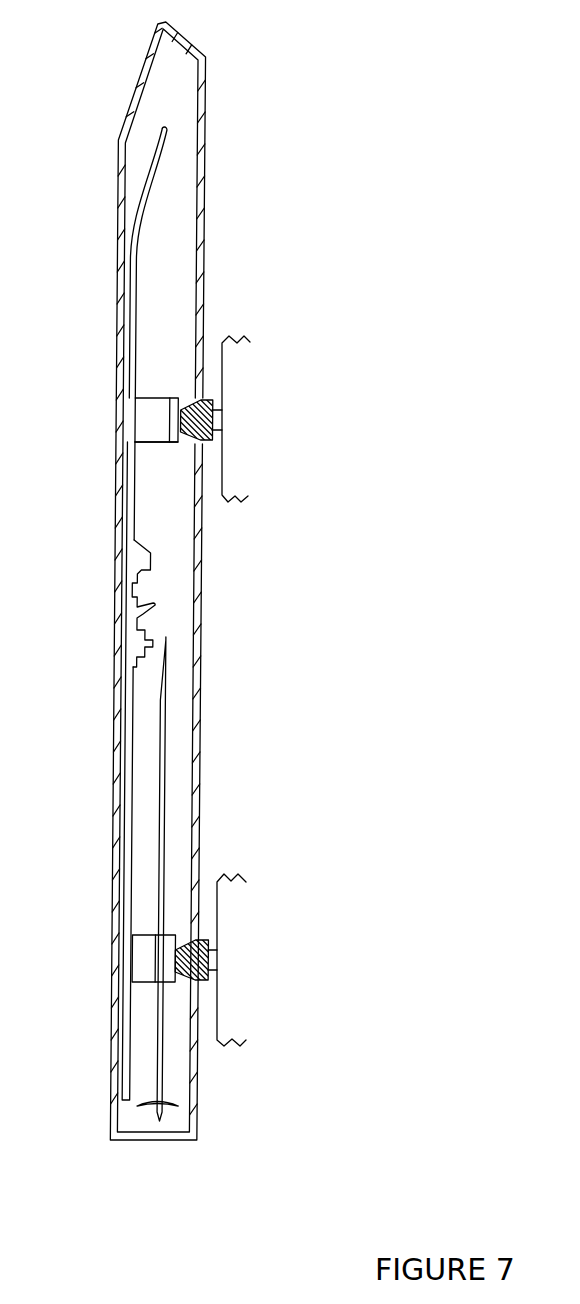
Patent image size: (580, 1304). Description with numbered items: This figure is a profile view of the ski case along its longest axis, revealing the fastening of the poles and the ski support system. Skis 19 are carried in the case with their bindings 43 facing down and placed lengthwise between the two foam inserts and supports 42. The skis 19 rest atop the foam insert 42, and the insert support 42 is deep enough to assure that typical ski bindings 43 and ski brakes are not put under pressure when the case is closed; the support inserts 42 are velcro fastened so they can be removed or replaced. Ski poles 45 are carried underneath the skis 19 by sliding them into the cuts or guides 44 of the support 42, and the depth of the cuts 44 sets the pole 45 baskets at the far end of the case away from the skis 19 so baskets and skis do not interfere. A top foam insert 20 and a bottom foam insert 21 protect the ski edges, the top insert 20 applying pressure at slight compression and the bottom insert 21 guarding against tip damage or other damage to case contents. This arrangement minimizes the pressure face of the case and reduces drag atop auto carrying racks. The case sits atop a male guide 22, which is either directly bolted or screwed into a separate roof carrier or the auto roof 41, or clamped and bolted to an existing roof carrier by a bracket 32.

The skis 19 is at (133, 747).
The top foam insert 20 is at (127, 148).
The bottom foam insert 21 is at (196, 118).
The male guide 22 is at (207, 995).
The bracket 32 is at (222, 417).
The auto roof 41 is at (240, 1038).
The foam insert and support 42 is at (150, 445).
The ski bindings 43 is at (137, 593).
The cuts/guides 44 is at (163, 400).
The ski poles 45 is at (163, 768).